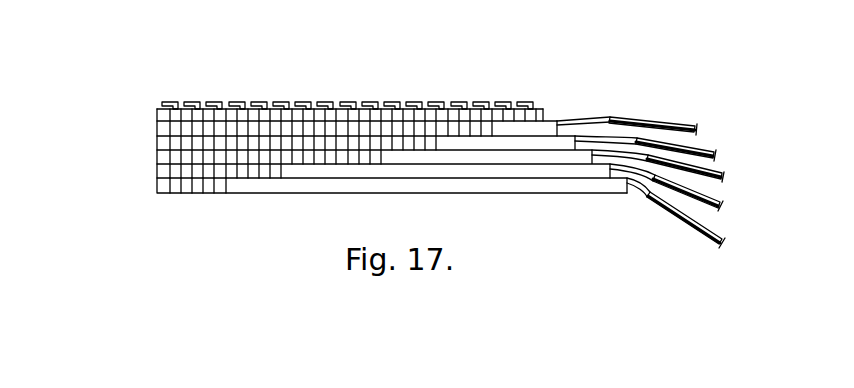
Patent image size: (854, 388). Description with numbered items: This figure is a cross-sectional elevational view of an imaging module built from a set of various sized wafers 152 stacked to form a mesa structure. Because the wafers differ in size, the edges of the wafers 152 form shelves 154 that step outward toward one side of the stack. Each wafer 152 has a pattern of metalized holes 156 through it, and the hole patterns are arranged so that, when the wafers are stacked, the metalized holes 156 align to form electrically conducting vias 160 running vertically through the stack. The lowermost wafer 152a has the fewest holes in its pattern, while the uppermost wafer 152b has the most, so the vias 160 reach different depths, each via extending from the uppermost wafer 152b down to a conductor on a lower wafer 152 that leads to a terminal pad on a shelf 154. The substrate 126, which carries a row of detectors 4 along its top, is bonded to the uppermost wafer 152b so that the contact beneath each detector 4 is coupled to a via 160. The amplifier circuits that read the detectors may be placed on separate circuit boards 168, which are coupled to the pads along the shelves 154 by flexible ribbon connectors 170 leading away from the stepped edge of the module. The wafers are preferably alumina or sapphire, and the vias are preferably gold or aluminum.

The detector 4 is at (502, 104).
The substrate 126 is at (157, 116).
The wafers 152 is at (162, 185).
The lowermost wafer 152a is at (272, 185).
The uppermost wafer 152b is at (157, 127).
The shelves 154 is at (583, 143).
The metalized holes 156 is at (178, 193).
The electrically conducting vias 160 is at (420, 112).
The circuit boards 168 is at (700, 196).
The flexible ribbon connectors 170 is at (641, 166).